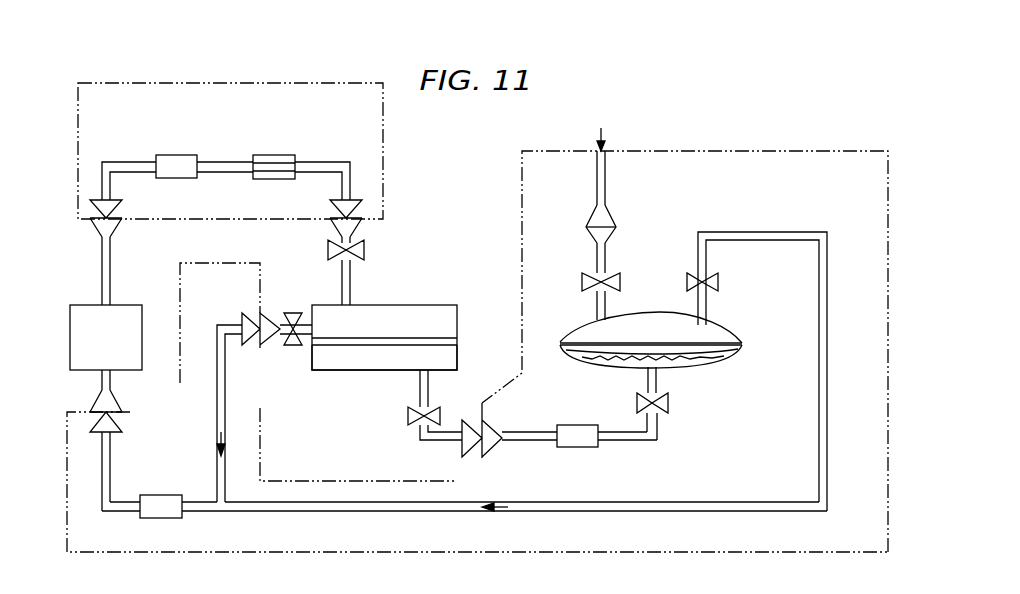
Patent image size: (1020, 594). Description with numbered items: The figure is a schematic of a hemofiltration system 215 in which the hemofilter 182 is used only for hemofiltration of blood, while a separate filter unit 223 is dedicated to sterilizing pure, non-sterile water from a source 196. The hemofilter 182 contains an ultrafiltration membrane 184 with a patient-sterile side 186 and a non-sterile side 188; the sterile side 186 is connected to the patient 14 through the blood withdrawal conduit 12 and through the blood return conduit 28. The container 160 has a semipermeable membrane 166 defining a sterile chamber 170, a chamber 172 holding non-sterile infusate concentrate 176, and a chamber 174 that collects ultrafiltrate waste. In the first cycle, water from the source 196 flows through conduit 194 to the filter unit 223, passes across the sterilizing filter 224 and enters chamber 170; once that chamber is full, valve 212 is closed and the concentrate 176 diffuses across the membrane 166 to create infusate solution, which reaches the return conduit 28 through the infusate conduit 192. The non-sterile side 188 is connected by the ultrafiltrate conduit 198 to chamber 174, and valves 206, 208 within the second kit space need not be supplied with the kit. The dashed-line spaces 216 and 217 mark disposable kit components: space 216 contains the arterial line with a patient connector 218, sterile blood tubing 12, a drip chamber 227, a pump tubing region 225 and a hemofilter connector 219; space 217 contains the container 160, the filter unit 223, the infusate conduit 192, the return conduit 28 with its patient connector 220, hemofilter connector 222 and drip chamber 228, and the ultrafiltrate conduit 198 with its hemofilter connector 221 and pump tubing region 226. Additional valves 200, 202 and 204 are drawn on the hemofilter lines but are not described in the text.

The blood withdrawal conduit 12 is at (213, 173).
The patient 14 is at (96, 353).
The blood return conduit 28 is at (217, 445).
The container 160 is at (560, 360).
The semipermeable membrane 166 is at (718, 330).
The chamber 170 is at (578, 330).
The chamber 172 is at (742, 350).
The chamber 174 is at (718, 365).
The infusate concentrate 176 is at (612, 357).
The hemofilter 182 is at (412, 278).
The ultrafiltration membrane 184 is at (457, 343).
The patient-sterile side 186 is at (437, 337).
The non-sterile side 188 is at (450, 348).
The infusate conduit 192 is at (828, 273).
The conduit 194 is at (607, 181).
The source 196 is at (602, 127).
The ultrafiltrate conduit 198 is at (624, 441).
The valve 200 is at (328, 250).
The valve 202 is at (293, 312).
The valve 204 is at (408, 415).
The valve 206 is at (668, 403).
The valve 208 is at (719, 282).
The valve 212 is at (621, 282).
The hemofiltration system 215 is at (160, 60).
The space 216 is at (318, 82).
The space 217 is at (740, 151).
The patient connector 218 is at (135, 198).
The connector 219 is at (395, 195).
The patient connector 220 is at (135, 390).
The hemofilter connector 221 is at (458, 462).
The hemofilter connector 222 is at (238, 358).
The filter unit 223 is at (592, 218).
The sterilizing filter 224 is at (610, 222).
The region of tubing 225 is at (276, 155).
The region of tubing 226 is at (578, 447).
The drip chamber 227 is at (180, 155).
The drip chamber 228 is at (160, 495).